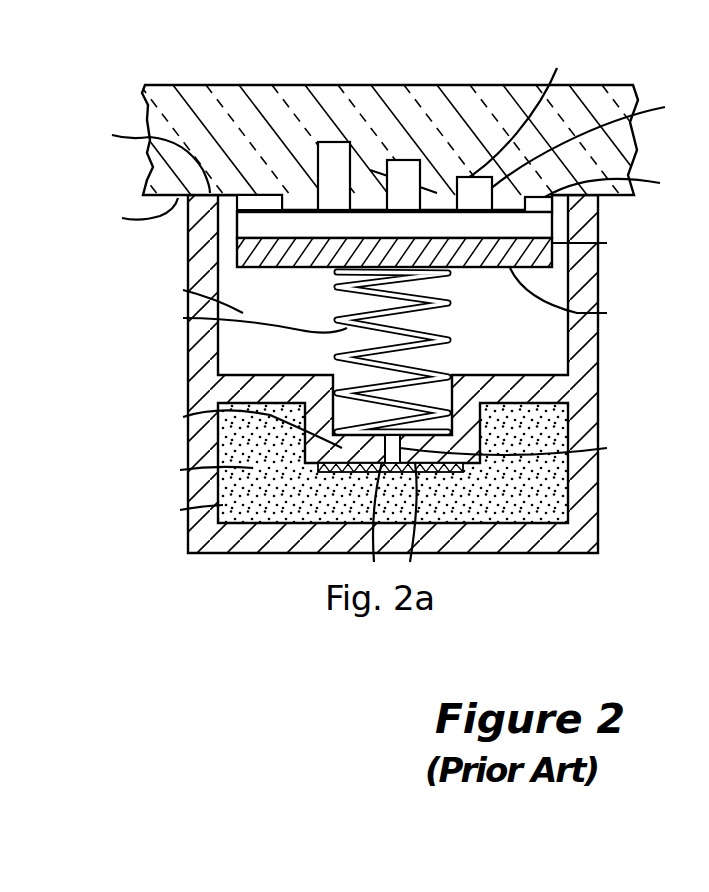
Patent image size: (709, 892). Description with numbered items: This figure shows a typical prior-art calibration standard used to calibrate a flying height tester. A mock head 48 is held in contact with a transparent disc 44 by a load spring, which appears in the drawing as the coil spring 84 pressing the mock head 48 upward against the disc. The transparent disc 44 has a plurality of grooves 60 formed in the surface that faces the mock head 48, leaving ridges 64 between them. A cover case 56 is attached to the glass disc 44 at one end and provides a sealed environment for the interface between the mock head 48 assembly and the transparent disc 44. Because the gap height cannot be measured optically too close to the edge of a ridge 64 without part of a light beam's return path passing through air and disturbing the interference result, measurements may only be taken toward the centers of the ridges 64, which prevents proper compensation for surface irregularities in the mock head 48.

The transparent disc 44 is at (160, 162).
The mock head 48 is at (235, 251).
The cover case 56 is at (188, 448).
The grooves 60 is at (480, 180).
The ridges 64 is at (365, 180).
The coil spring 84 is at (337, 272).